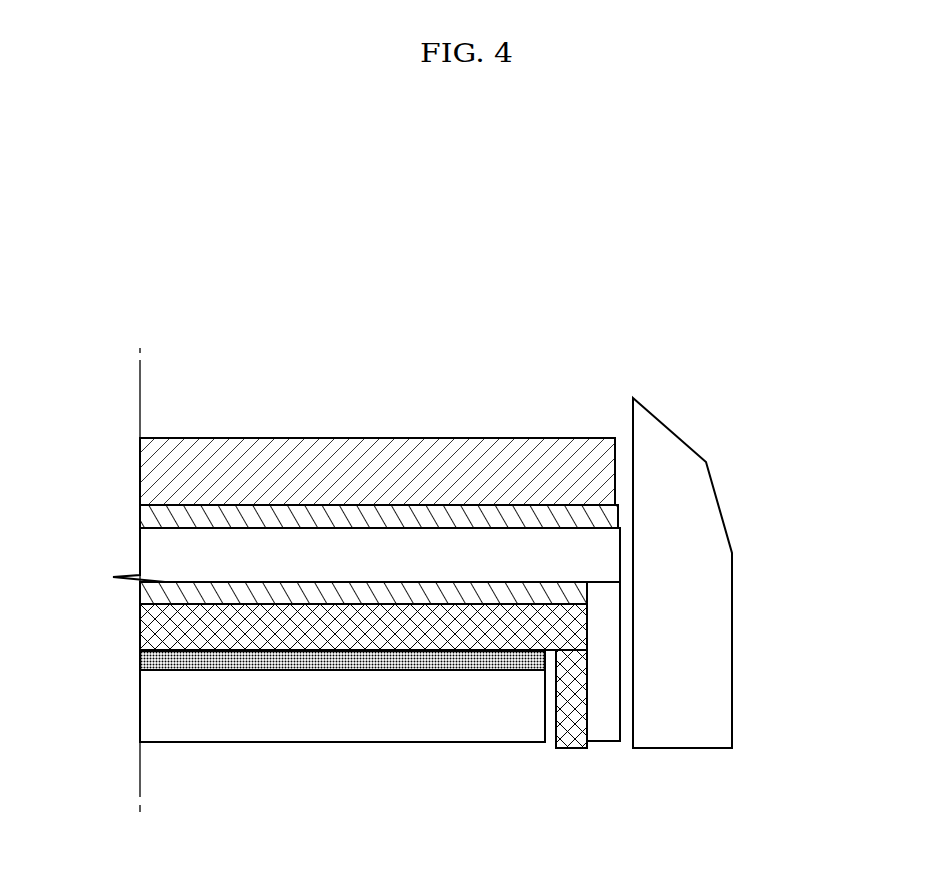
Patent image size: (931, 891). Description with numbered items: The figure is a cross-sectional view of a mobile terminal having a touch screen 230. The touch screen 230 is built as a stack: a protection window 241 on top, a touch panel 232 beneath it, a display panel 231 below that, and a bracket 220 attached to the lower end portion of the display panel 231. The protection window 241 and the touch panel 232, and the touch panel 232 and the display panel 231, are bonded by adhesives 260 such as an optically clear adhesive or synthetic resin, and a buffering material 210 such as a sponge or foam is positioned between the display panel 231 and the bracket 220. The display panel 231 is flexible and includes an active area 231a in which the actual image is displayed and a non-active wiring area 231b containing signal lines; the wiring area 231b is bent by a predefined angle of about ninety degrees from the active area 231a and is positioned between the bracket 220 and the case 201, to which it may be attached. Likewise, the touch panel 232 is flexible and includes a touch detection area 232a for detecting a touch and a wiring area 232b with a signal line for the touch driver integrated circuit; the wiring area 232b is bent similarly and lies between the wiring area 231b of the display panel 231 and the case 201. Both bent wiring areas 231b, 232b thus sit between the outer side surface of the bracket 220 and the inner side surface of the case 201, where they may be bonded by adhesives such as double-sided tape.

The case 201 is at (670, 438).
The buffering material 210 is at (142, 660).
The bracket 220 is at (142, 708).
The touch screen 230 is at (533, 357).
The display panel 231 is at (587, 808).
The active area 231a is at (505, 642).
The wiring area 231b is at (570, 750).
The touch panel 232 is at (806, 548).
The touch detection area 232a is at (543, 552).
The wiring area 232b is at (598, 627).
The protection window 241 is at (140, 480).
The adhesives 260 is at (140, 520).